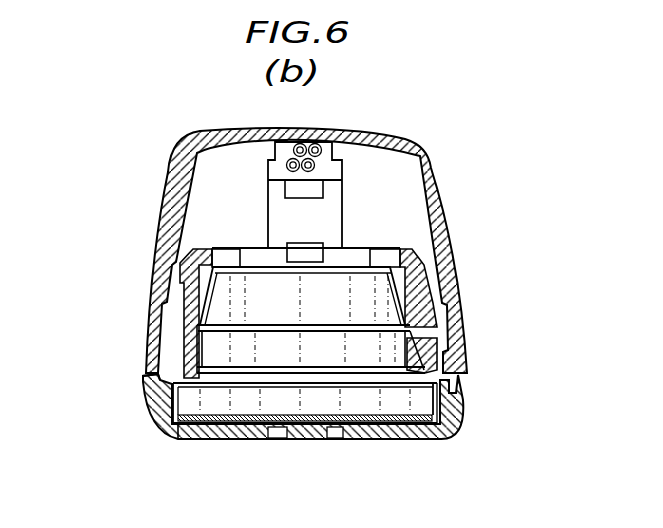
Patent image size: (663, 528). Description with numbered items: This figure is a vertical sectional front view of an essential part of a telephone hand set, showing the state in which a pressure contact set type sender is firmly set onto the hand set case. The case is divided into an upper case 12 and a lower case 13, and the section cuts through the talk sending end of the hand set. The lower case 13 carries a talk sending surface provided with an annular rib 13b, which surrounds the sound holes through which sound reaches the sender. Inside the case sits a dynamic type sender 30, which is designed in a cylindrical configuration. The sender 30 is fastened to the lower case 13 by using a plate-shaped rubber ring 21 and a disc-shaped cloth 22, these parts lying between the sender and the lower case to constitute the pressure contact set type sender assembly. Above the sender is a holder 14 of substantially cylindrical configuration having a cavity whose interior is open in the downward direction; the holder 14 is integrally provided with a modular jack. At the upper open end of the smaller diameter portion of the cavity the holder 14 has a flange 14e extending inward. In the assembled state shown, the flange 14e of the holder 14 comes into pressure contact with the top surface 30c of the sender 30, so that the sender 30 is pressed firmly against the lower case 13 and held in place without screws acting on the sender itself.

The upper case 12 is at (462, 209).
The lower case 13 is at (464, 445).
The annular rib 13b is at (147, 375).
The holder 14 is at (183, 255).
The flange 14e is at (219, 256).
The plate-shaped rubber ring 21 is at (183, 439).
The disc-shaped cloth 22 is at (322, 423).
The dynamic type sender 30 is at (243, 412).
The top surface 30c is at (258, 266).